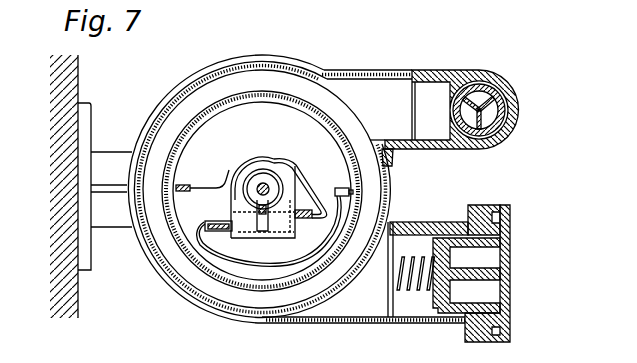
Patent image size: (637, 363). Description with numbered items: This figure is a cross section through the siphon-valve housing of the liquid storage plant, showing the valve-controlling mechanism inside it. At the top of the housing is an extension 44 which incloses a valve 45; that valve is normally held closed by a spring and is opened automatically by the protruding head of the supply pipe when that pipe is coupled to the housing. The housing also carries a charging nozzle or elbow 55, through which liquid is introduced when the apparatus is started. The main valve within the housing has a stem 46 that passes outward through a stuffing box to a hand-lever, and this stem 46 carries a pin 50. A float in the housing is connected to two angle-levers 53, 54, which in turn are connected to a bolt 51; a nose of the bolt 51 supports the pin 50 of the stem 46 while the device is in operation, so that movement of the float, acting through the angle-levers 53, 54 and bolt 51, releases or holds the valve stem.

The extension 44 is at (400, 222).
The valve 45 is at (433, 303).
The stem 46 is at (257, 186).
The pin 50 is at (256, 213).
The bolt 51 is at (223, 236).
The angle-lever 53 is at (280, 158).
The angle-lever 54 is at (284, 264).
The charging nozzle or elbow 55 is at (483, 69).